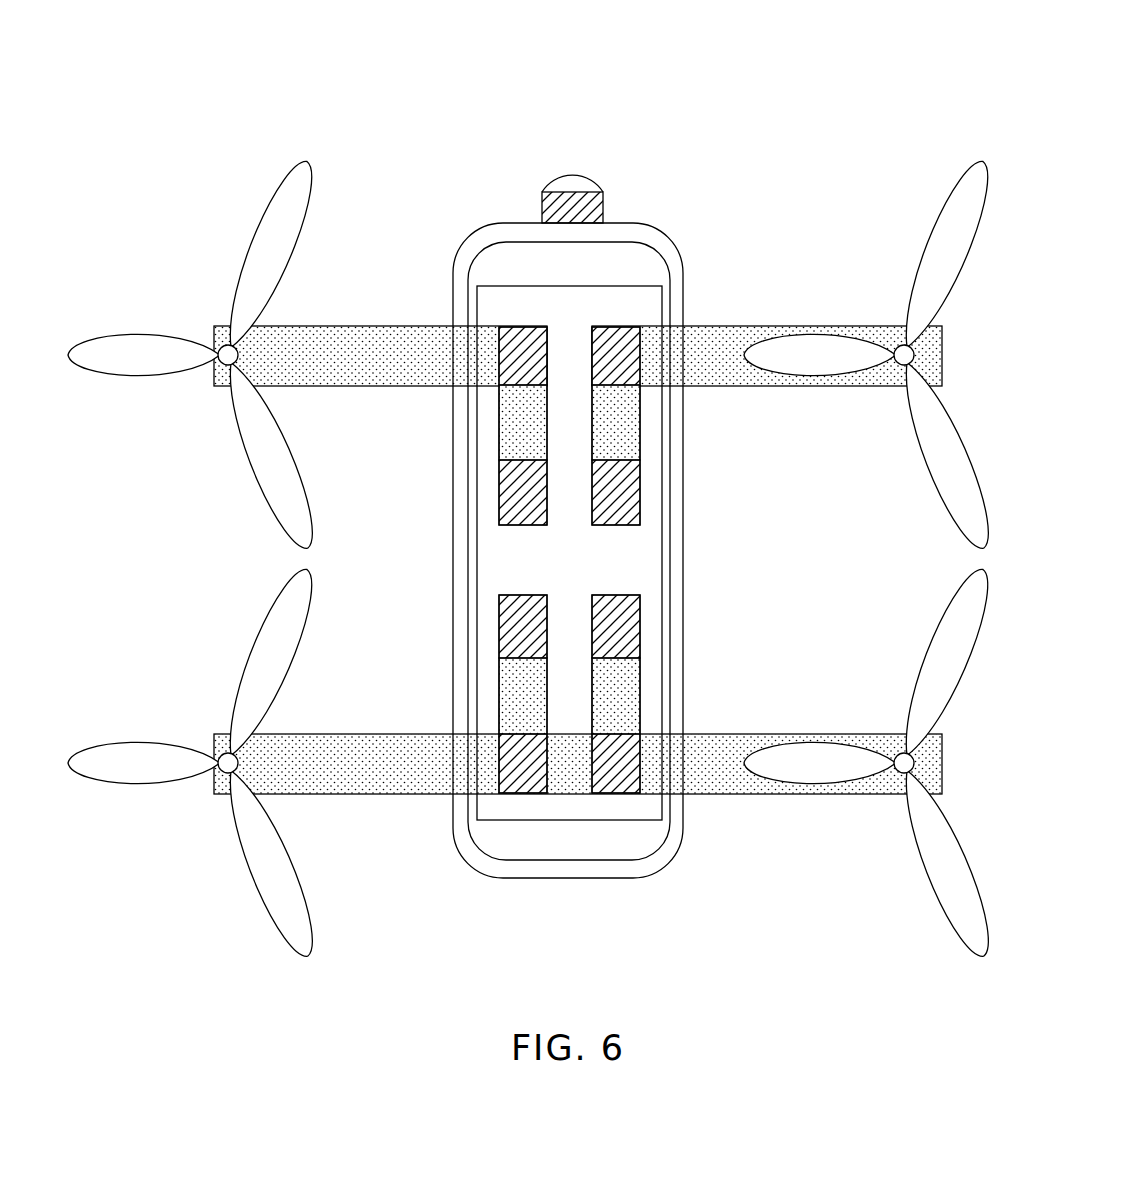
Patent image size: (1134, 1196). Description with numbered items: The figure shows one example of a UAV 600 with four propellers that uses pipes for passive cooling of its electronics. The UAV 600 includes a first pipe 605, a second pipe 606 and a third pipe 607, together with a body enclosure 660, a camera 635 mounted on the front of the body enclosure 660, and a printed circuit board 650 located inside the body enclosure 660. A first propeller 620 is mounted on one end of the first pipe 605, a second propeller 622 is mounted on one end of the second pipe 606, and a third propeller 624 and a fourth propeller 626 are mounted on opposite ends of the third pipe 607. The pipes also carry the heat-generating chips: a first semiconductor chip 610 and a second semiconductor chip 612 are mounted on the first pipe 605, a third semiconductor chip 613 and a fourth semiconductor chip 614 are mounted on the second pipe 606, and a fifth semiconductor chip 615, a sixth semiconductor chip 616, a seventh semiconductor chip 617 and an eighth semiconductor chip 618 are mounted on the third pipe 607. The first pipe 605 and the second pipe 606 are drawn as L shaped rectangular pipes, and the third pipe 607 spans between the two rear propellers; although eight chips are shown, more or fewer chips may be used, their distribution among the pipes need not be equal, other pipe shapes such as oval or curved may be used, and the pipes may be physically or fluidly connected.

The UAV 600 is at (806, 70).
The first pipe 605 is at (704, 325).
The second pipe 606 is at (347, 325).
The third pipe 607 is at (707, 733).
The first semiconductor chip 610 is at (613, 338).
The second semiconductor chip 612 is at (617, 493).
The third semiconductor chip 613 is at (517, 340).
The fourth semiconductor chip 614 is at (505, 497).
The fifth semiconductor chip 615 is at (622, 628).
The sixth semiconductor chip 616 is at (507, 626).
The seventh semiconductor chip 617 is at (627, 770).
The eighth semiconductor chip 618 is at (512, 770).
The first propeller 620 is at (290, 182).
The second propeller 622 is at (942, 225).
The third propeller 624 is at (940, 646).
The fourth propeller 626 is at (262, 652).
The camera 635 is at (575, 184).
The printed circuit board 650 is at (542, 286).
The body enclosure 660 is at (675, 558).